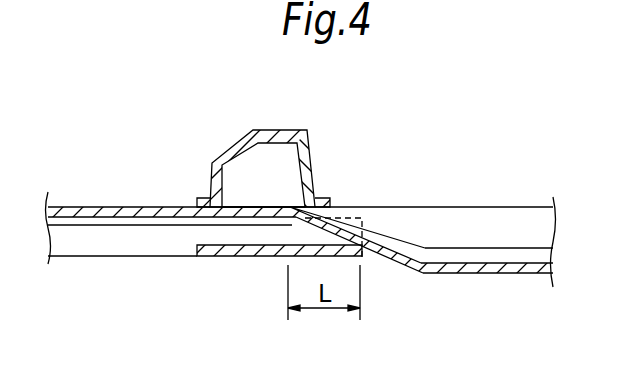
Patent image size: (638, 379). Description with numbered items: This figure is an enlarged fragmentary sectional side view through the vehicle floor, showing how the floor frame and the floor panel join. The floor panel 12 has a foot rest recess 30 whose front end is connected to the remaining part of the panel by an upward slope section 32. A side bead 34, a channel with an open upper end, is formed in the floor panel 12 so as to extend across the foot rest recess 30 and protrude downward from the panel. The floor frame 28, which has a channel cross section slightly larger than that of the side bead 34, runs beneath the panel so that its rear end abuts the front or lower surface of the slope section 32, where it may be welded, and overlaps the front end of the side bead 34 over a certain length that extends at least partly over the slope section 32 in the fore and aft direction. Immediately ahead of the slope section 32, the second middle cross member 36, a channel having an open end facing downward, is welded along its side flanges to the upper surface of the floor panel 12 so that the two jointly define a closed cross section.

The floor panel 12 is at (88, 206).
The floor frame 28 is at (235, 258).
The foot rest recess 30 is at (502, 224).
The upward slope section 32 is at (398, 236).
The side bead 34 is at (486, 262).
The second middle cross member 36 is at (277, 126).